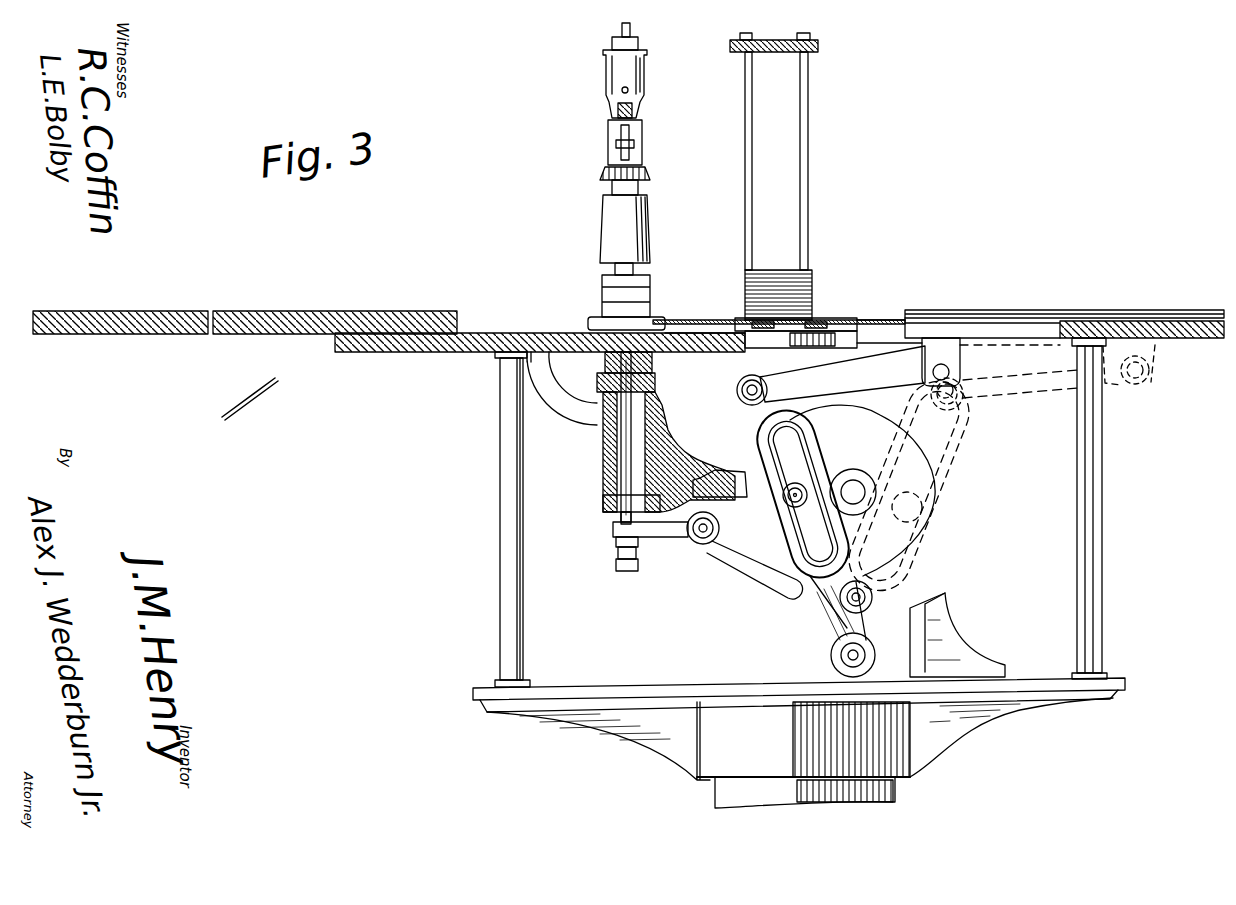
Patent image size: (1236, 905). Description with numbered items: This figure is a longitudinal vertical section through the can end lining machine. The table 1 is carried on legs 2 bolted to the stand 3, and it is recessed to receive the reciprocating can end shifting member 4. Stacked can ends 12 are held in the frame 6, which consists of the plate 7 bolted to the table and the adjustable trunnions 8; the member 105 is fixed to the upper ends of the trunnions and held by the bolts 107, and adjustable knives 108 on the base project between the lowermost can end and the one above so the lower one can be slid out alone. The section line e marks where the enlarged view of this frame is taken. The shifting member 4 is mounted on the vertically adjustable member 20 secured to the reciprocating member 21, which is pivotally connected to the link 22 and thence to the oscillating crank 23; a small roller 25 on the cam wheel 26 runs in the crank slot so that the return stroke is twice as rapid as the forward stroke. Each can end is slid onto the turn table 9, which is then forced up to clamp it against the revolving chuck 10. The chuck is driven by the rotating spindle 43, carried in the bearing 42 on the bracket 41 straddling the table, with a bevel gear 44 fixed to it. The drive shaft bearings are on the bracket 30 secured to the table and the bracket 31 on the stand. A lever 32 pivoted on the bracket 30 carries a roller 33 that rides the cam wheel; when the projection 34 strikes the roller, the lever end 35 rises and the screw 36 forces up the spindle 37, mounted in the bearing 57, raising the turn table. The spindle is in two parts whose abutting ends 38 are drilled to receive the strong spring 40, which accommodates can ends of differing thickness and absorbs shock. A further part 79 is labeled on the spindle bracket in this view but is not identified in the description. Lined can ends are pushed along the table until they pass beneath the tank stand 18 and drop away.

The table 1 is at (470, 332).
The legs 2 is at (500, 552).
The stand 3 is at (722, 757).
The can end shifting member 4 is at (900, 324).
The frame 6 is at (808, 193).
The plate 7 is at (856, 320).
The adjustable trunnions 8 is at (800, 180).
The turn table 9 is at (660, 352).
The revolving chuck 10 is at (600, 297).
The can end 12 is at (812, 276).
The tank stand 18 is at (255, 311).
The member 20 is at (840, 342).
The reciprocating member 21 is at (945, 345).
The link 22 is at (997, 472).
The oscillating crank 23 is at (815, 580).
The roller 25 is at (760, 540).
The cam wheel 26 is at (925, 492).
The bracket 30 is at (550, 415).
The bracket 31 is at (955, 650).
The lever 32 is at (788, 505).
The roller 33 is at (892, 598).
The projection 34 is at (828, 410).
The end of lever 35 is at (645, 555).
The screw 36 is at (613, 527).
The spindle 37 is at (612, 368).
The abutting end 38 is at (621, 462).
The spring 40 is at (605, 450).
The bracket 41 is at (596, 147).
The bearing 42 is at (650, 230).
The rotating spindle 43 is at (612, 188).
The bevel gear 44 is at (650, 174).
The bearing 57 is at (615, 508).
The bracket 79 is at (632, 445).
The member 105 is at (775, 40).
The bolts 107 is at (742, 36).
The adjustable knives 108 is at (826, 330).
The section line e— e is at (843, 293).